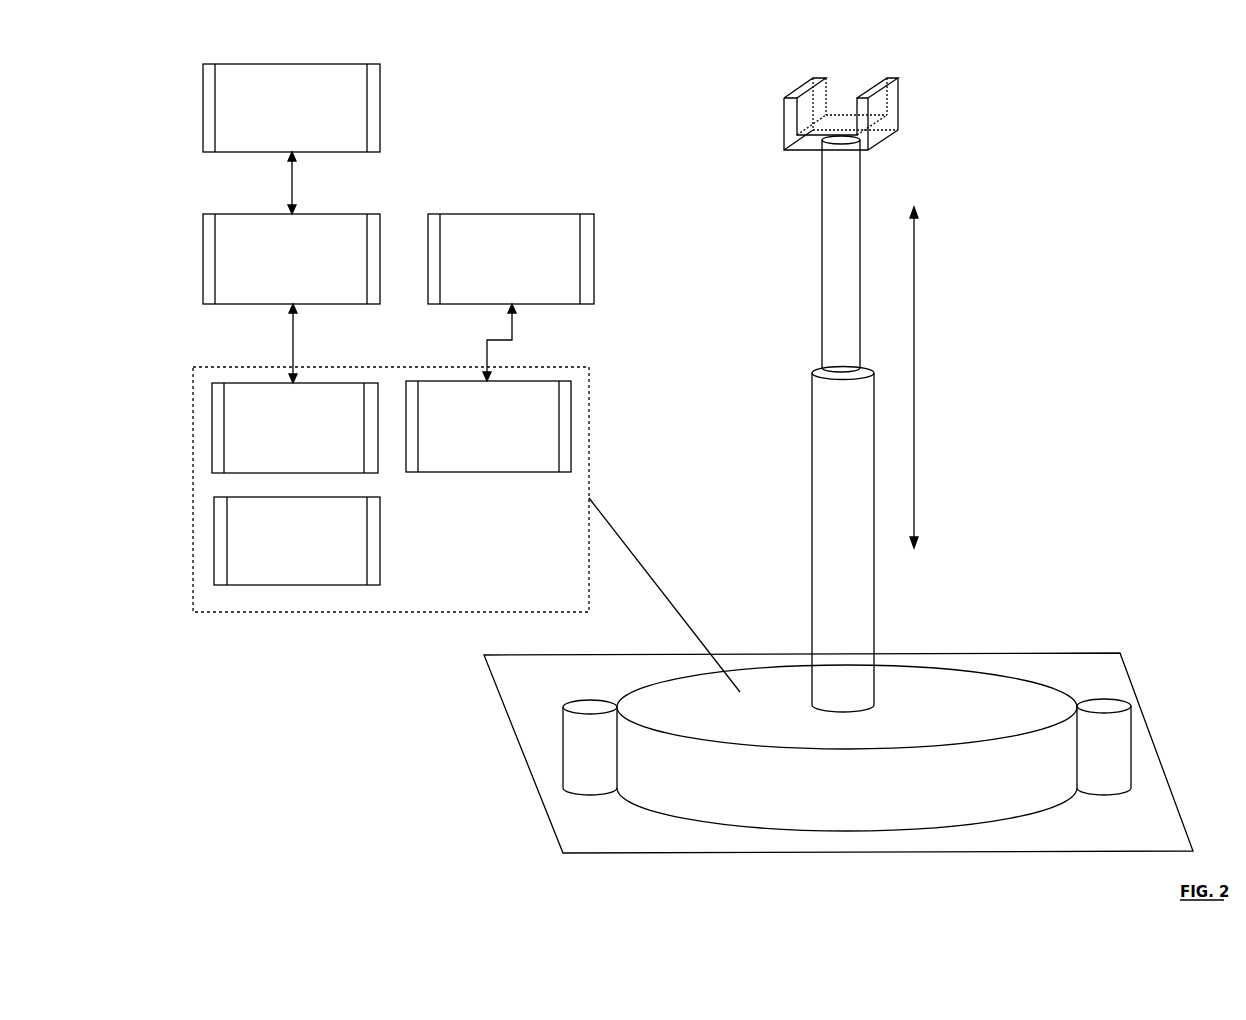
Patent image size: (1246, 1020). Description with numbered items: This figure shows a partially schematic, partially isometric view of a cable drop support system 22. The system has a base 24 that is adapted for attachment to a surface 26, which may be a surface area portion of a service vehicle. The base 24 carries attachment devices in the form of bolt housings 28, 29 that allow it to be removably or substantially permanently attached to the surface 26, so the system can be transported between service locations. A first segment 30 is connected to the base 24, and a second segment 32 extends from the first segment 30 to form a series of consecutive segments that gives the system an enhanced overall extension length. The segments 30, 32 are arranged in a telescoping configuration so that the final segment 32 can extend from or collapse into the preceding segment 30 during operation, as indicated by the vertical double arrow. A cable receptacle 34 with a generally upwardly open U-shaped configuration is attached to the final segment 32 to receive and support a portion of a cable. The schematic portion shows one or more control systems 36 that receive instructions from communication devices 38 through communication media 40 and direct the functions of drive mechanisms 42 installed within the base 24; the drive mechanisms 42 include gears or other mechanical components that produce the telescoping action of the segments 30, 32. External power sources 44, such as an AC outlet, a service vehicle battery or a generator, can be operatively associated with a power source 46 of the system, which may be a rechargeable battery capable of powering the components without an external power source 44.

The cable drop support system 22 is at (1132, 124).
The base 24 is at (983, 698).
The surface 26 is at (1080, 652).
The bolt housing 28 is at (585, 747).
The bolt housing 29 is at (1100, 745).
The first segment 30 is at (850, 565).
The second segment 32 is at (843, 247).
The cable receptacle 34 is at (783, 115).
The control system 36 is at (212, 417).
The communication device 38 is at (382, 107).
The communication media 40 is at (353, 214).
The drive mechanism 42 is at (214, 524).
The external power source 44 is at (552, 214).
The power source 46 is at (571, 418).